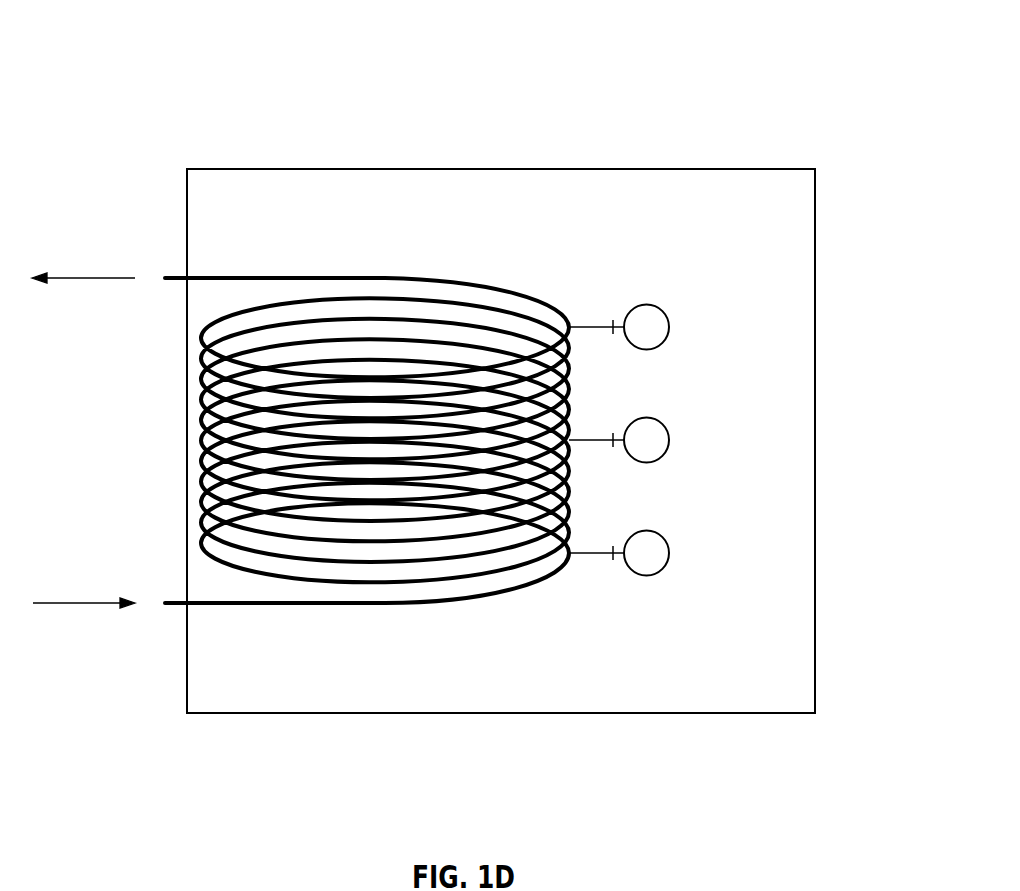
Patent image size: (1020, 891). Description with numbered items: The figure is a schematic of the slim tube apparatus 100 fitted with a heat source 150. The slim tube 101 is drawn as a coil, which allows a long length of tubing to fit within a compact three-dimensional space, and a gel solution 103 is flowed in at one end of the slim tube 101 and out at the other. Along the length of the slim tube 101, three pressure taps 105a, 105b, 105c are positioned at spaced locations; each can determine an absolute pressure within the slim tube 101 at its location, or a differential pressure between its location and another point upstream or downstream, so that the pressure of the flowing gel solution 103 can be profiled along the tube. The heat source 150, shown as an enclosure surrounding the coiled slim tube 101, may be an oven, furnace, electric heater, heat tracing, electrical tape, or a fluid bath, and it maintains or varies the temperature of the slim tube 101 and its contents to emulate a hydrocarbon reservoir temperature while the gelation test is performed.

The slim tube apparatus 100 is at (700, 112).
The slim tube 101 is at (370, 605).
The gel solution 103 is at (73, 603).
The pressure tap 105a is at (669, 551).
The pressure tap 105b is at (669, 438).
The pressure tap 105c is at (669, 325).
The heat source 150 is at (791, 686).